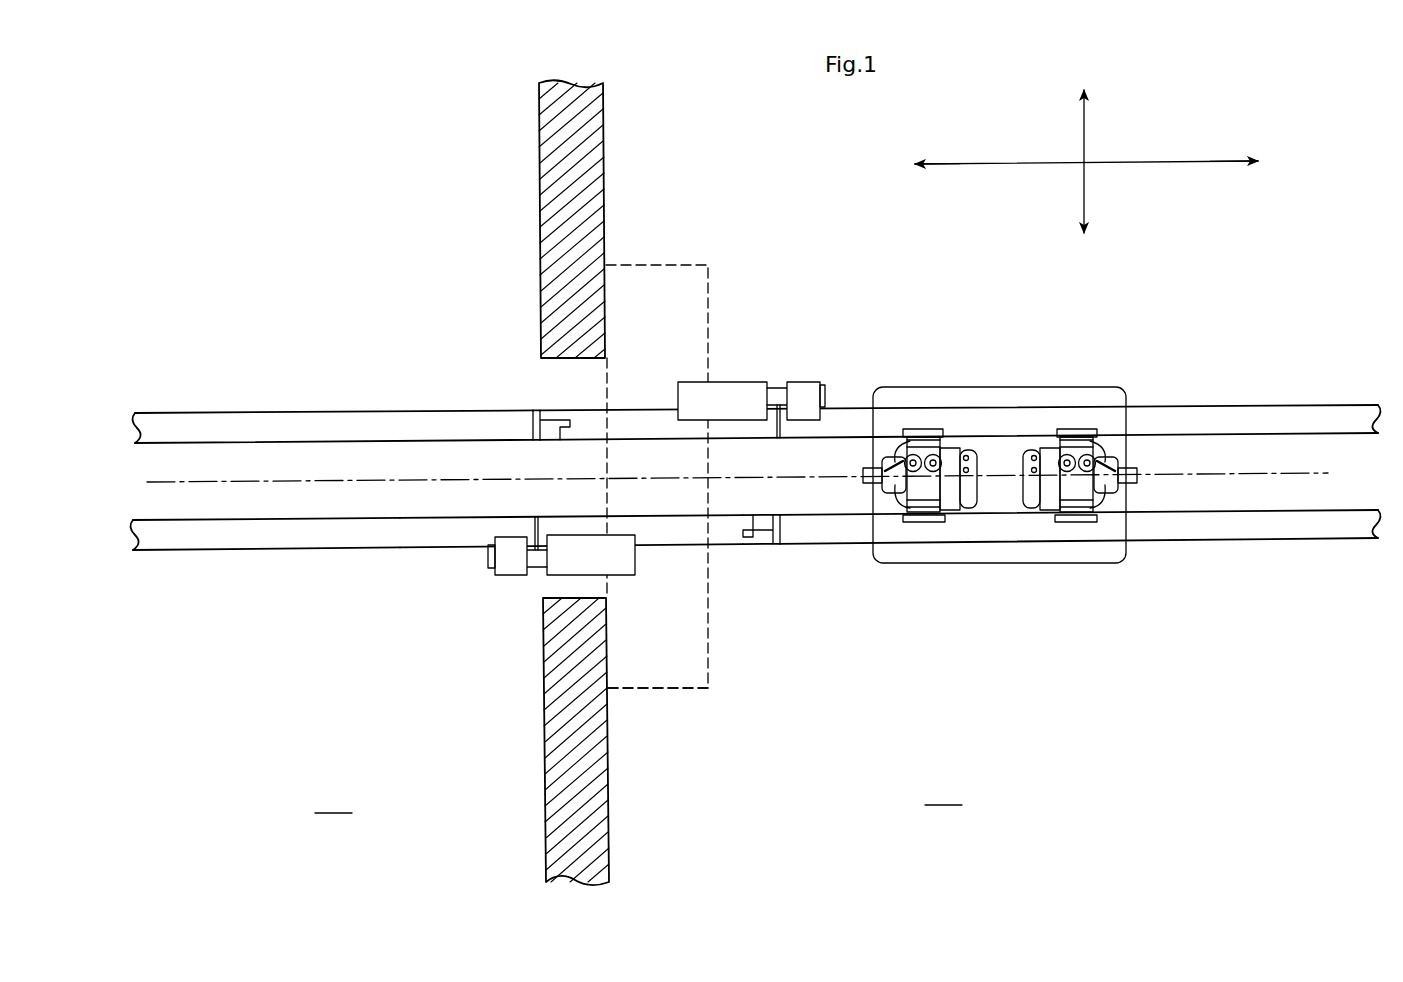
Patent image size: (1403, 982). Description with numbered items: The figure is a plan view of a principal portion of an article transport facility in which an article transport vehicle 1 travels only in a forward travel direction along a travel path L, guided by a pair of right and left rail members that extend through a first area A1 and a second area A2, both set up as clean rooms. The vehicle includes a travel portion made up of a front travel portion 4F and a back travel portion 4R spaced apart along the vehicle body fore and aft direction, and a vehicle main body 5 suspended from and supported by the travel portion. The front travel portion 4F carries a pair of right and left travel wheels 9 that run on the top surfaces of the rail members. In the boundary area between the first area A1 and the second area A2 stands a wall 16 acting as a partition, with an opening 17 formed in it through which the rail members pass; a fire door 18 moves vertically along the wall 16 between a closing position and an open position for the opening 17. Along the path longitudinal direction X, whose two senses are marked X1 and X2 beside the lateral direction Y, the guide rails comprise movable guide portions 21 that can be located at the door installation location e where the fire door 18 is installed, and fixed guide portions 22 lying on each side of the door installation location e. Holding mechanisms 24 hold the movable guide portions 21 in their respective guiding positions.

The article transport vehicle 1 is at (1008, 352).
The front travel portion 4F is at (882, 501).
The back travel portion 4R is at (1117, 501).
The vehicle main body 5 is at (1025, 550).
The travel wheels 9 is at (908, 429).
The wall 16 is at (592, 157).
The opening 17 is at (535, 387).
The fire door 18 is at (688, 265).
The movable guide portions 21 is at (648, 409).
The fixed guide portions 22 is at (286, 412).
The holding mechanisms 24 is at (786, 373).
The travel path L is at (746, 481).
The door installation location e is at (653, 704).
The first area A1 is at (333, 800).
The second area A2 is at (943, 792).
The path longitudinal direction X is at (1086, 151).
The first travel direction X1 is at (1252, 165).
The second travel direction X2 is at (919, 165).
The lateral direction Y is at (1094, 161).